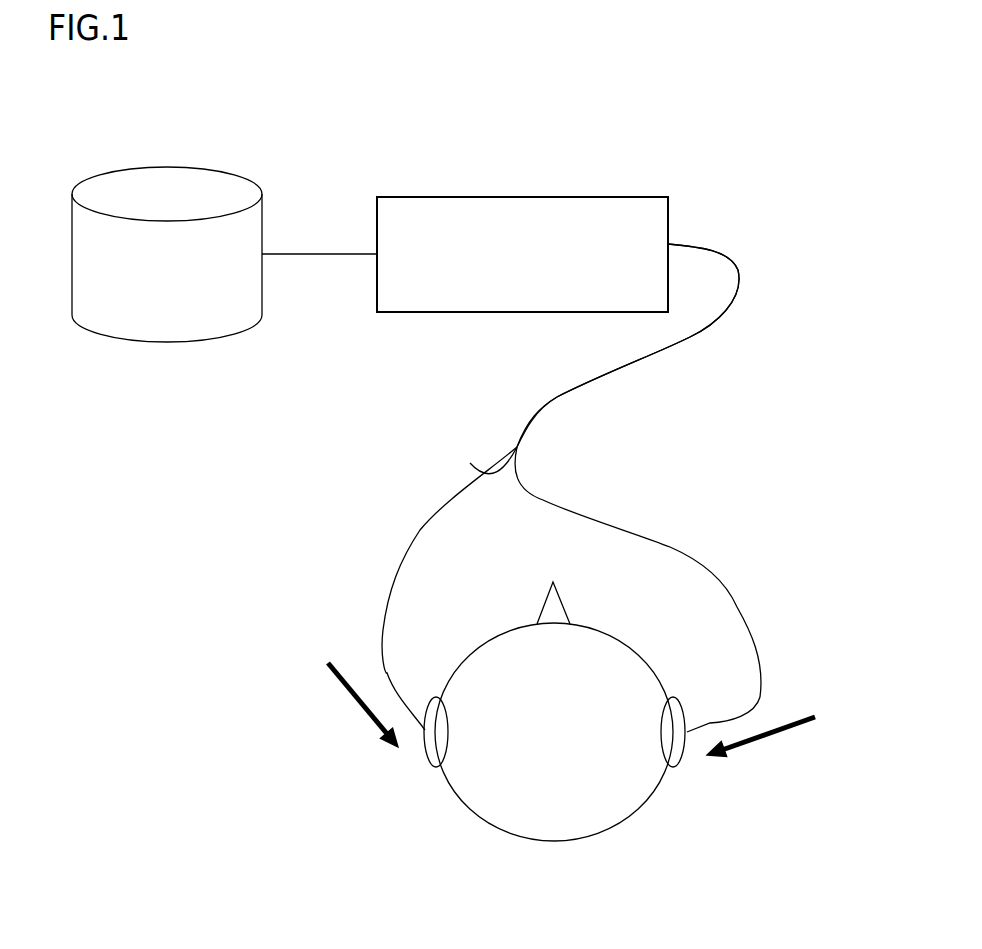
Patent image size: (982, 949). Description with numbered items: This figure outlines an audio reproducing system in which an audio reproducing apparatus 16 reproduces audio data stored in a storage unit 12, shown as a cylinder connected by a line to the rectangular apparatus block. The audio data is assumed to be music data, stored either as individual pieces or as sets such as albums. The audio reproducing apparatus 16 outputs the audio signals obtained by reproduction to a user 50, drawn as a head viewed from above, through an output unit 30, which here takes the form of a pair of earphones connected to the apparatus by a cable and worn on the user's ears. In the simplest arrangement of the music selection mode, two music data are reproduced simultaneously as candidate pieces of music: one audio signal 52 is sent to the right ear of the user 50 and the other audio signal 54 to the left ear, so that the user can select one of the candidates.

The storage unit 12 is at (175, 166).
The audio reproducing apparatus 16 is at (488, 196).
The output unit 30 is at (427, 762).
The user 50 is at (503, 835).
The audio signal 52 is at (773, 737).
The audio signal 54 is at (353, 698).